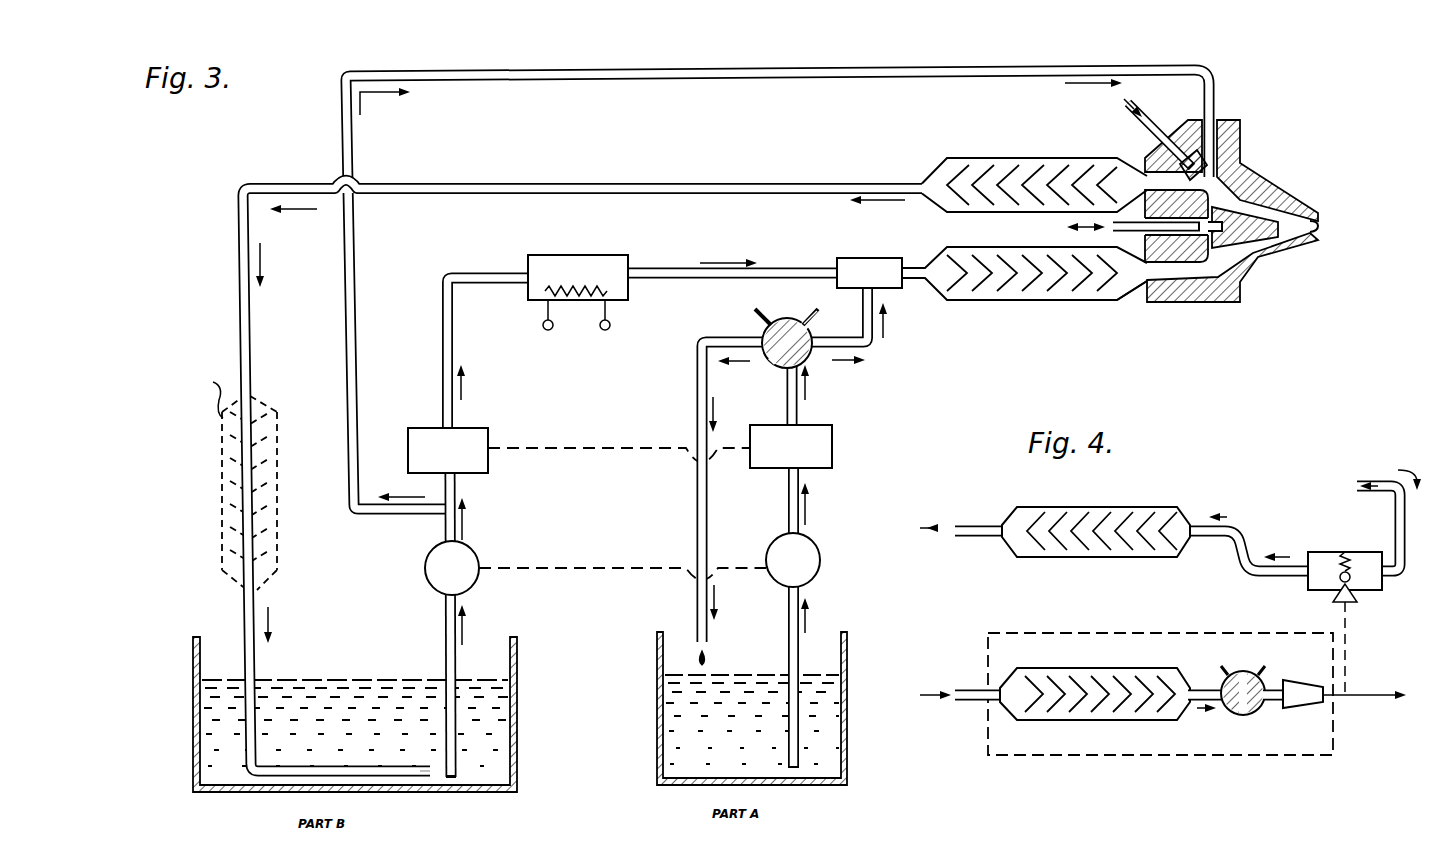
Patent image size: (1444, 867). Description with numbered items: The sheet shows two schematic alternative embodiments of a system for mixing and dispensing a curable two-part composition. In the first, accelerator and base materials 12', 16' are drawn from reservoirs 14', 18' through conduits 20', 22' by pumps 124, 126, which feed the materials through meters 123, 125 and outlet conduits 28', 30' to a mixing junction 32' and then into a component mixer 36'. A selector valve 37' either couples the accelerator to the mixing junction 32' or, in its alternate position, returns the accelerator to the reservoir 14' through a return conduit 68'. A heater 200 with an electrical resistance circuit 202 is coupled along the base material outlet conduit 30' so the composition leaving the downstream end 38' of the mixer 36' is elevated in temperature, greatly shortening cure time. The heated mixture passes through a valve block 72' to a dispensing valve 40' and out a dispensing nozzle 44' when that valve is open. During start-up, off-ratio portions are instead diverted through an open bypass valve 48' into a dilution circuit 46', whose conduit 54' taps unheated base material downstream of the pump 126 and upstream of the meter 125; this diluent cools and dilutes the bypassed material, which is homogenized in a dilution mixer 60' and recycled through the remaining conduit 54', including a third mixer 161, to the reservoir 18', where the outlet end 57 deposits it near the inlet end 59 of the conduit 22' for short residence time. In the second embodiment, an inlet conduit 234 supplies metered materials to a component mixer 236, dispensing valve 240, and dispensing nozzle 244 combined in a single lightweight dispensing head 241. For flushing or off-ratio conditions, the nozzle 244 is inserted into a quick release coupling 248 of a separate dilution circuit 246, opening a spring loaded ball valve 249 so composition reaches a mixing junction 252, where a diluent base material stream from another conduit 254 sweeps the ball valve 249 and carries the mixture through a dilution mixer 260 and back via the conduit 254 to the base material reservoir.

In FIG. 3, the accelerator material 12' is at (736, 748).
In FIG. 3, the accelerator reservoir 14' is at (771, 708).
In FIG. 3, the base material 16' is at (386, 723).
In FIG. 3, the base material reservoir 18' is at (384, 714).
In FIG. 3, the accelerator conduit 20' is at (837, 567).
In FIG. 3, the base material pump inlet conduit 22' is at (506, 624).
In FIG. 3, the accelerator outlet conduit 28' is at (862, 328).
In FIG. 3, the base material outlet conduit 30' is at (489, 353).
In FIG. 3, the mixing junction 32' is at (870, 256).
In FIG. 3, the component mixer 36' is at (1023, 292).
In FIG. 3, the selector valve 37' is at (800, 345).
In FIG. 3, the downstream end of mixer 38' is at (1148, 309).
In FIG. 3, the dispensing valve 40' is at (1271, 211).
In FIG. 3, the dispensing nozzle 44' is at (1347, 219).
In FIG. 3, the dilution circuit 46' is at (1214, 154).
In FIG. 3, the bypass valve 48' is at (1215, 139).
In FIG. 3, the dilution conduit 54' is at (726, 405).
In FIG. 3, the outlet end of conduit 57 is at (431, 777).
In FIG. 3, the inlet end of pump inlet conduit 59 is at (458, 777).
In FIG. 3, the dilution mixer 60' is at (1034, 164).
In FIG. 3, the return conduit 68' is at (701, 503).
In FIG. 3, the valve block 72' is at (1232, 267).
In FIG. 3, the accelerator meter 123 is at (833, 460).
In FIG. 3, the accelerator pump 124 is at (820, 552).
In FIG. 3, the base material meter 125 is at (488, 440).
In FIG. 3, the base material pump 126 is at (478, 556).
In FIG. 3, the third mixer 161 is at (222, 552).
In FIG. 3, the heater 200 is at (583, 255).
In FIG. 3, the electrical resistance circuit 202 is at (551, 331).
In FIG. 4, the inlet conduit 234 is at (985, 702).
In FIG. 4, the component mixer 236 is at (1100, 720).
In FIG. 4, the dispensing valve 240 is at (1243, 672).
In FIG. 4, the dispensing head 241 is at (1083, 633).
In FIG. 4, the dispensing nozzle 244 is at (1310, 705).
In FIG. 4, the dilution circuit 246 is at (1218, 496).
In FIG. 4, the quick release coupling 248 is at (1360, 598).
In FIG. 4, the spring loaded ball valve 249 is at (1325, 581).
In FIG. 4, the mixing junction 252 is at (1325, 552).
In FIG. 4, the diluent conduit 254 is at (985, 525).
In FIG. 4, the dilution mixer 260 is at (1095, 507).